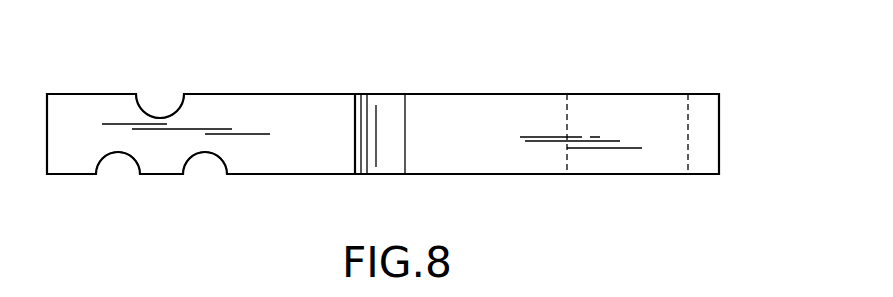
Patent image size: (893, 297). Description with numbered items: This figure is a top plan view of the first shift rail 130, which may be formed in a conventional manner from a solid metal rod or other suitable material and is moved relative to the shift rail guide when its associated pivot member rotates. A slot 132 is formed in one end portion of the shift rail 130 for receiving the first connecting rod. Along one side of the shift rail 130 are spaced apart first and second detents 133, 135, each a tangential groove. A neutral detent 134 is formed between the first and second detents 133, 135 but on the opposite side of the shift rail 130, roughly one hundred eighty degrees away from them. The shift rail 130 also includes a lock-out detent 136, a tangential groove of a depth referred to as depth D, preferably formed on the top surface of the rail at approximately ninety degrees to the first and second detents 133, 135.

The first shift rail 130 is at (736, 121).
The slot 132 is at (630, 160).
The first detent 133 is at (120, 155).
The neutral detent 134 is at (160, 115).
The second detent 135 is at (207, 153).
The first lock-out detent 136 is at (390, 102).